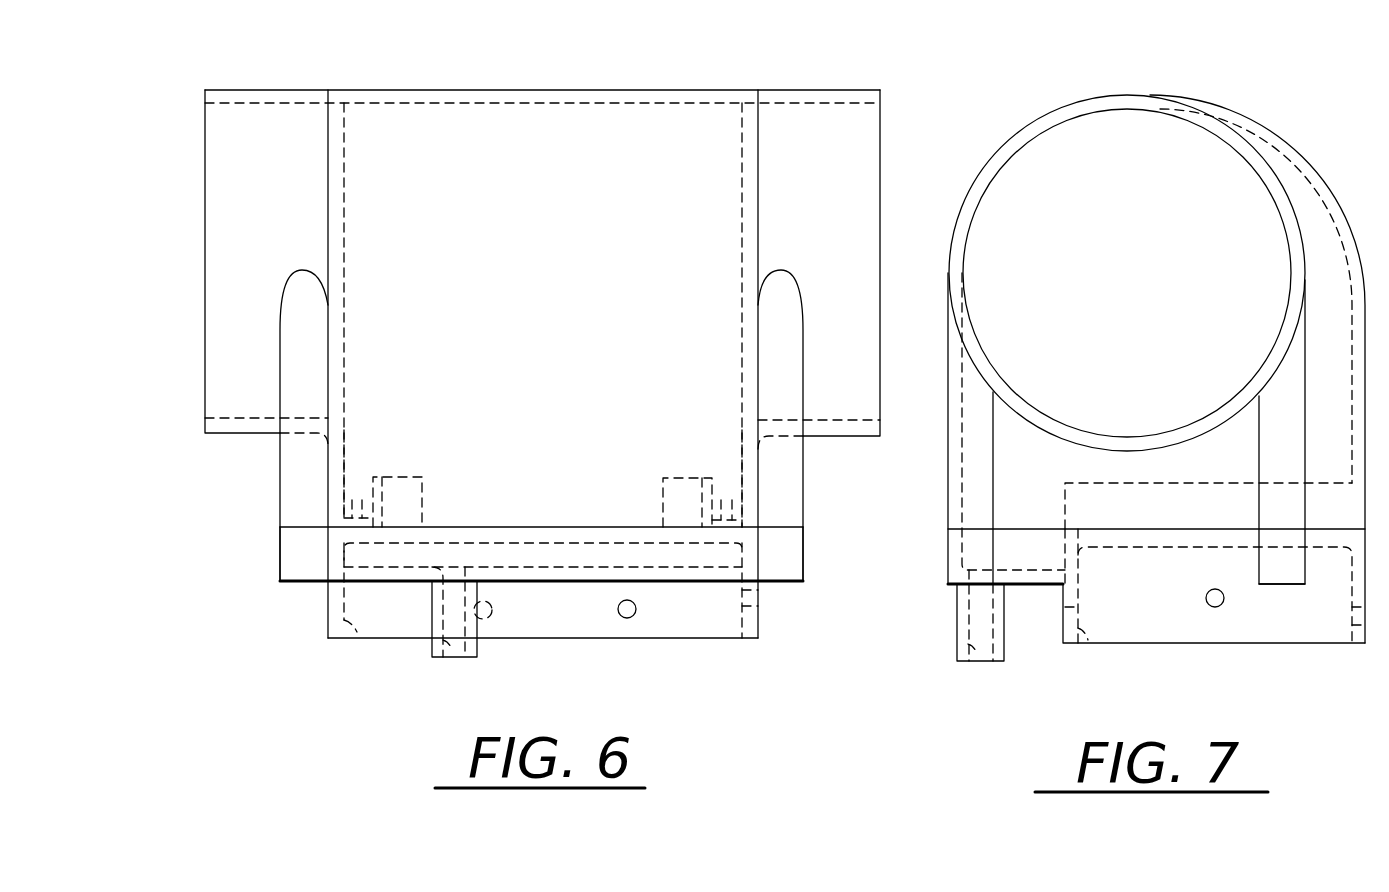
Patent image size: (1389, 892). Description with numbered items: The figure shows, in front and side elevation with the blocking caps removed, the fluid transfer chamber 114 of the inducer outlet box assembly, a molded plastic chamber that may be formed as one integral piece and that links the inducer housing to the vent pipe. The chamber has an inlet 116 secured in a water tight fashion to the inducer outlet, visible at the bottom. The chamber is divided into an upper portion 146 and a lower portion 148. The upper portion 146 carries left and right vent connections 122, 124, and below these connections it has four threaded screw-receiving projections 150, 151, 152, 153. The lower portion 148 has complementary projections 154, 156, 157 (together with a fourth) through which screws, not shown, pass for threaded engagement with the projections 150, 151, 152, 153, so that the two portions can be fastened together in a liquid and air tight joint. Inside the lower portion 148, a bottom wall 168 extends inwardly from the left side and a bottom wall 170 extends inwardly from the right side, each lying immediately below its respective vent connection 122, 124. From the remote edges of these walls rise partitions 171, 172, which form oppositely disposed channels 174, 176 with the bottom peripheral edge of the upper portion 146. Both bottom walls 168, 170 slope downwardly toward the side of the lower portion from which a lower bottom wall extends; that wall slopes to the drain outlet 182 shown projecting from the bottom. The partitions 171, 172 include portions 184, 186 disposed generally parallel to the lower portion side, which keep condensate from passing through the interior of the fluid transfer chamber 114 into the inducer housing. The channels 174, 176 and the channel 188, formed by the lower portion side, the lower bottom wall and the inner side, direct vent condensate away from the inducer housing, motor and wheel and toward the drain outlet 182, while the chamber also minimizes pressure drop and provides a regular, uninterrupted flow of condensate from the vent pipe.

In FIG. 6, the fluid transfer chamber 114 is at (580, 84).
In FIG. 7, the fluid transfer chamber 114 is at (1315, 165).
In FIG. 6, the inlet 116 is at (356, 640).
In FIG. 7, the inlet 116 is at (1086, 645).
In FIG. 6, the left vent connection 122 is at (265, 88).
In FIG. 6, the right vent connection 124 is at (812, 88).
In FIG. 7, the right vent connection 124 is at (1040, 114).
In FIG. 6, the upper portion 146 is at (272, 454).
In FIG. 7, the upper portion 146 is at (942, 463).
In FIG. 6, the lower portion 148 is at (319, 614).
In FIG. 7, the lower portion 148 is at (1300, 657).
In FIG. 6, the threaded screw-receiving projection 150 is at (278, 495).
In FIG. 6, the threaded screw-receiving projection 151 is at (304, 425).
In FIG. 6, the threaded screw-receiving projection 152 is at (805, 466).
In FIG. 7, the threaded screw-receiving projection 152 is at (980, 434).
In FIG. 6, the threaded screw-receiving projection 153 is at (780, 425).
In FIG. 7, the threaded screw-receiving projection 153 is at (1276, 430).
In FIG. 6, the complementary projection 154 is at (278, 545).
In FIG. 6, the complementary projection 156 is at (805, 551).
In FIG. 7, the complementary projection 156 is at (945, 561).
In FIG. 7, the complementary projection 157 is at (1272, 588).
In FIG. 6, the bottom wall 168 is at (353, 518).
In FIG. 6, the bottom wall 170 is at (732, 518).
In FIG. 6, the partition 171 is at (362, 517).
In FIG. 6, the partition 172 is at (721, 518).
In FIG. 6, the channel 174 is at (346, 495).
In FIG. 6, the channel 176 is at (742, 505).
In FIG. 6, the drain outlet 182 is at (447, 656).
In FIG. 7, the drain outlet 182 is at (975, 663).
In FIG. 6, the partition portion 184 is at (397, 477).
In FIG. 6, the partition portion 186 is at (683, 478).
In FIG. 6, the channel 188 is at (505, 557).
In FIG. 7, the channel 188 is at (1208, 563).